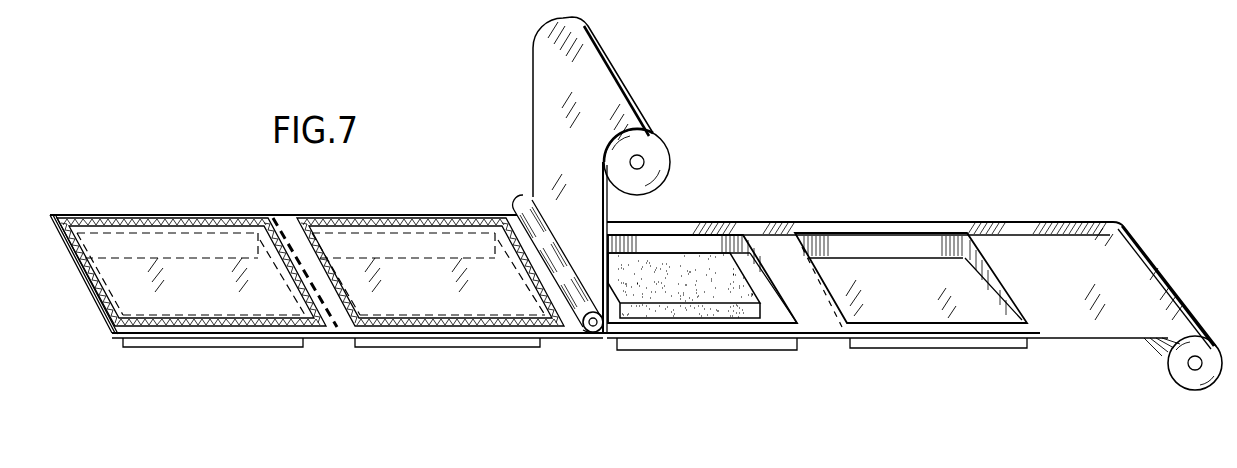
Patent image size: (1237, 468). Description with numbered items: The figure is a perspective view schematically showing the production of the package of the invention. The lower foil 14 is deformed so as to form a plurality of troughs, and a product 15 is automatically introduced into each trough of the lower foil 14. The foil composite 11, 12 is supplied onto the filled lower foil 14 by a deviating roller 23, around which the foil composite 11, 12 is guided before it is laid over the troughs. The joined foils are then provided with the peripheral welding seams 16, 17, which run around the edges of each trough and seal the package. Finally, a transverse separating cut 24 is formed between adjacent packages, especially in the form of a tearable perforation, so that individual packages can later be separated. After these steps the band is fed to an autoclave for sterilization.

The foil composite 11 is at (537, 107).
The foil composite 12 is at (627, 179).
The lower foil 14 is at (1068, 237).
The product 15 is at (700, 265).
The peripheral welding seam 16 is at (352, 221).
The peripheral welding seam 17 is at (428, 274).
The deviating roller 23 is at (591, 335).
The transverse separating cut 24 is at (288, 224).